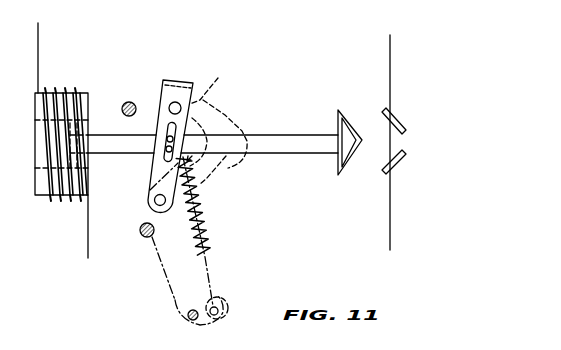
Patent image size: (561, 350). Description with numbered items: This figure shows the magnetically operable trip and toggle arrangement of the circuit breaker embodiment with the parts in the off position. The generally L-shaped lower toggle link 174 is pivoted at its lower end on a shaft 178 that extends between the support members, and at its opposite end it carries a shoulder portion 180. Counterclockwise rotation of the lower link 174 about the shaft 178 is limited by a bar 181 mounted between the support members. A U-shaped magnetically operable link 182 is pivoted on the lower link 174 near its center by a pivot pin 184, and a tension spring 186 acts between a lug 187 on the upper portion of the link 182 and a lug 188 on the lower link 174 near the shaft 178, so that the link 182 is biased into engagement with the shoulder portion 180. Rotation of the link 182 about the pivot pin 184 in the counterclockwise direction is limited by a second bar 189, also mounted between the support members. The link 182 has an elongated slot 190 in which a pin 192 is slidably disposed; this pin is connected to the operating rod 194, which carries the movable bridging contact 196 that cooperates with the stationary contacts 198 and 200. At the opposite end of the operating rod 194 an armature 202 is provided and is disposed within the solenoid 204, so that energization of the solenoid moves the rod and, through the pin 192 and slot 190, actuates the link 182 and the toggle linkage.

The lower toggle link 174 is at (167, 277).
The shaft 178 is at (187, 315).
The shoulder portion 180 is at (214, 88).
The bar 181 is at (140, 231).
The magnetically operable link 182 is at (193, 81).
The pivot pin 184 is at (154, 200).
The tension spring 186 is at (205, 207).
The lug 187 is at (160, 100).
The lug 188 is at (228, 297).
The bar 189 is at (127, 102).
The elongated slot 190 is at (167, 162).
The pin 192 is at (167, 150).
The operating rod 194 is at (258, 150).
The movable bridging contact 196 is at (337, 117).
The stationary contact 198 is at (397, 120).
The stationary contact 200 is at (396, 166).
The armature 202 is at (89, 121).
The solenoid 204 is at (58, 92).